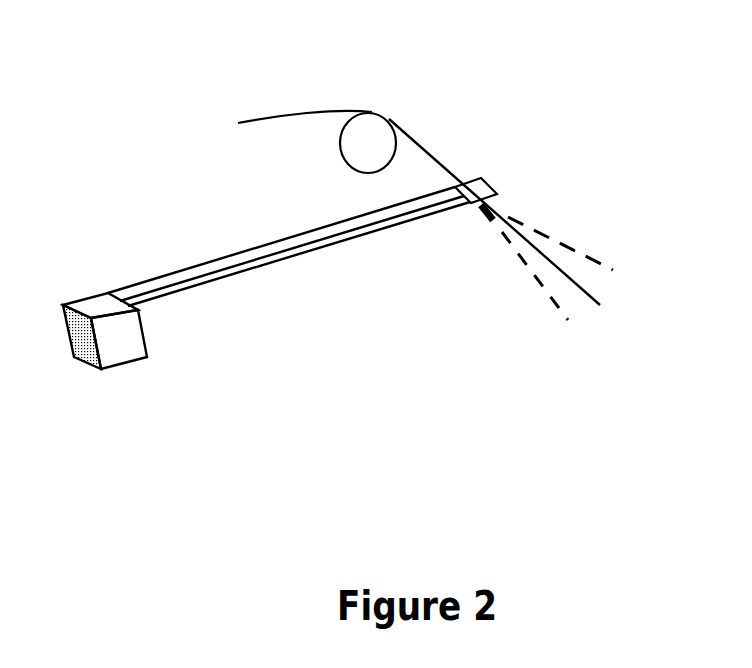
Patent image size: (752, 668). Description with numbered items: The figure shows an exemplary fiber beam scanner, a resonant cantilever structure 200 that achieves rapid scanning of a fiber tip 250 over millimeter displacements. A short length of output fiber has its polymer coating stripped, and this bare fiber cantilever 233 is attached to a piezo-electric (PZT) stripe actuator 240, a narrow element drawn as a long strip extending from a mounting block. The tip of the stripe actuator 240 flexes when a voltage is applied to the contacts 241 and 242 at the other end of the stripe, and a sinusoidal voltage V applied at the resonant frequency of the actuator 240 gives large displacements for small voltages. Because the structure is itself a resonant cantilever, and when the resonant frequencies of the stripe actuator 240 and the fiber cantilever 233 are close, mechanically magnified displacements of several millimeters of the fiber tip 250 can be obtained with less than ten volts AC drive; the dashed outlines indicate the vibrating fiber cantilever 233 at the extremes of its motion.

The resonant cantilever structure 200 is at (550, 60).
The fiber cantilever 233 is at (514, 242).
The piezo-electric (PZT) stripe actuator 240 is at (253, 249).
The contact 241 is at (103, 293).
The contact 242 is at (138, 311).
The fiber tip 250 is at (604, 307).